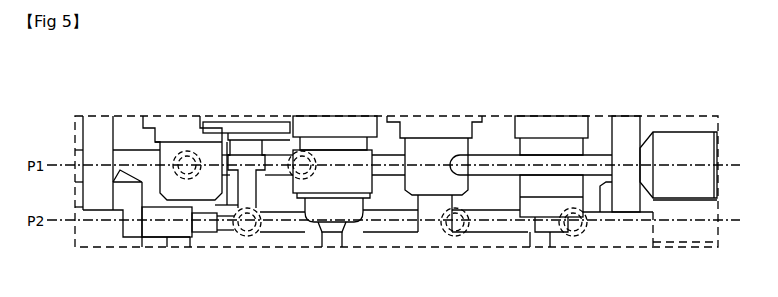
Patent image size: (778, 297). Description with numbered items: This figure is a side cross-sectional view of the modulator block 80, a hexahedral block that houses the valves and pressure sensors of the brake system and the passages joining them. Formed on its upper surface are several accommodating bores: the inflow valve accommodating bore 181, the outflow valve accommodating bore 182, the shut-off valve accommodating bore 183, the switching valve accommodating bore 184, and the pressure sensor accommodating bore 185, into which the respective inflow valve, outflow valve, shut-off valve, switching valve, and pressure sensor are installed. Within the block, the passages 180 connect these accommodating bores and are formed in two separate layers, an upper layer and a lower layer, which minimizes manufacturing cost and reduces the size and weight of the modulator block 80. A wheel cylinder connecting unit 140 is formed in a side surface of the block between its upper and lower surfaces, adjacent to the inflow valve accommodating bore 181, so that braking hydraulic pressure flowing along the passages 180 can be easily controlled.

The modulator block 80 is at (660, 116).
The wheel cylinder connecting unit 140 is at (712, 150).
The passages 180 is at (497, 172).
The inflow valve accommodating bore 181 is at (553, 124).
The outflow valve accommodating bore 182 is at (435, 124).
The shut-off valve accommodating bore 183 is at (333, 122).
The switching valve accommodating bore 184 is at (176, 116).
The pressure sensor accommodating bore 185 is at (241, 122).